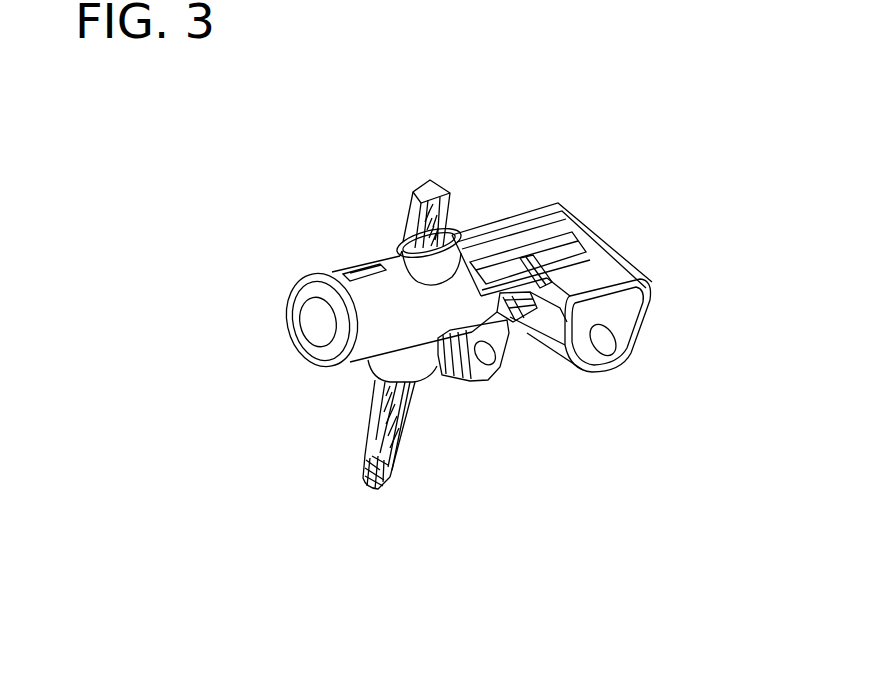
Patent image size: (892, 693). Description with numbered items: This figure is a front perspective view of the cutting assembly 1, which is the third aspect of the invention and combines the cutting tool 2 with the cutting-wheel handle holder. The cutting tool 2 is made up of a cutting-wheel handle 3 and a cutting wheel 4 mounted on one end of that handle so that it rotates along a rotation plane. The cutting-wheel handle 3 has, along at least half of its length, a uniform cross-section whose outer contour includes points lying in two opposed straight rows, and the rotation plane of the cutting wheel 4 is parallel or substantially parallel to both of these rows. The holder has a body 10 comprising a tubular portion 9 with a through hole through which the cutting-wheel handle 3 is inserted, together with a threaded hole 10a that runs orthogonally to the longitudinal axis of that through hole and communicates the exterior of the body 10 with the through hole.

The cutting assembly 1 is at (548, 408).
The cutting tool 2 is at (452, 170).
The cutting-wheel handle 3 is at (367, 415).
The cutting wheel 4 is at (367, 483).
The tubular portion 9 is at (393, 232).
The body 10 is at (620, 317).
The threaded hole 10a is at (328, 315).